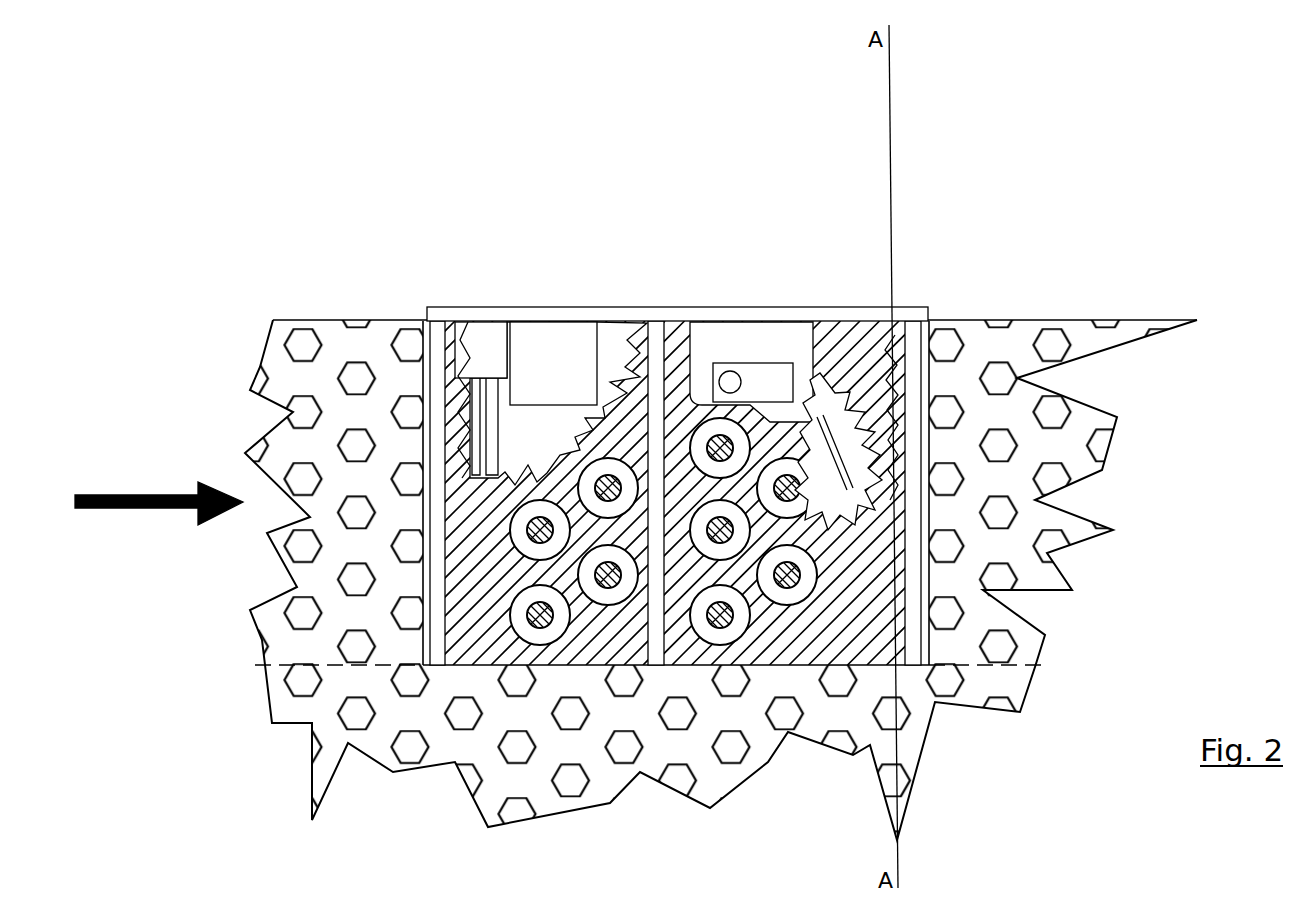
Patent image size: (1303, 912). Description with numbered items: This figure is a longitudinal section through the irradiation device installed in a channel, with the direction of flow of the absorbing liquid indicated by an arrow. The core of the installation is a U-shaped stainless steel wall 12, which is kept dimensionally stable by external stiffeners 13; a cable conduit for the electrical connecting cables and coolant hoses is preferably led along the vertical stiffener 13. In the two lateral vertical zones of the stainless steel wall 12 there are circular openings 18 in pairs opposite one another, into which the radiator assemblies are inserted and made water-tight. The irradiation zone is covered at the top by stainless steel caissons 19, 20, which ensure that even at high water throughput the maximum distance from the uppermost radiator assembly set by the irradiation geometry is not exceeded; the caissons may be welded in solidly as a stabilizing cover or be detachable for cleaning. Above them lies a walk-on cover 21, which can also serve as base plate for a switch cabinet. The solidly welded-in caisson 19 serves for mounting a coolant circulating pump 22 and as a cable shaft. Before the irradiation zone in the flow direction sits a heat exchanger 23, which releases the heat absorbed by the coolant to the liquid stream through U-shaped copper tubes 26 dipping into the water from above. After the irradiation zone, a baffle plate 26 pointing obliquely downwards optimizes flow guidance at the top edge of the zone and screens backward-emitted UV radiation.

The U-shaped stainless steel wall 12 is at (836, 446).
The external stiffener 13 is at (418, 376).
The circular opening 18 is at (604, 445).
The stainless steel caisson 19 is at (696, 350).
The stainless steel caisson 20 is at (550, 367).
The walk-on cover 21 is at (500, 308).
The coolant circulating pump 22 is at (782, 362).
The heat exchanger 23 is at (479, 338).
The baffle plate 26 is at (454, 380).